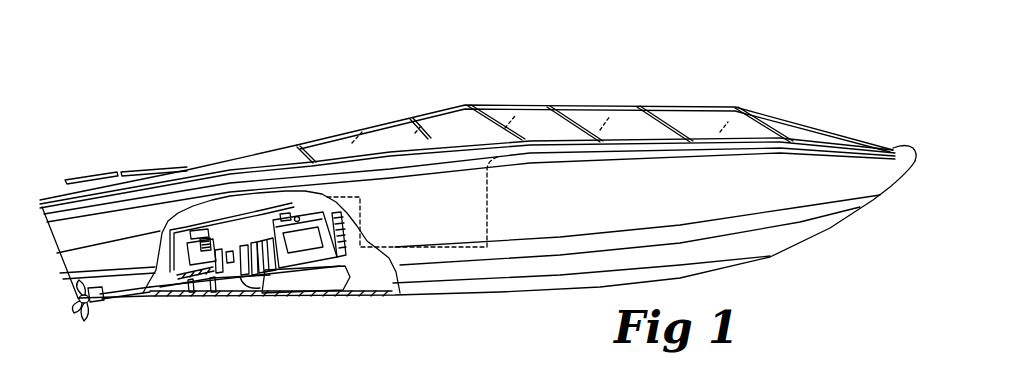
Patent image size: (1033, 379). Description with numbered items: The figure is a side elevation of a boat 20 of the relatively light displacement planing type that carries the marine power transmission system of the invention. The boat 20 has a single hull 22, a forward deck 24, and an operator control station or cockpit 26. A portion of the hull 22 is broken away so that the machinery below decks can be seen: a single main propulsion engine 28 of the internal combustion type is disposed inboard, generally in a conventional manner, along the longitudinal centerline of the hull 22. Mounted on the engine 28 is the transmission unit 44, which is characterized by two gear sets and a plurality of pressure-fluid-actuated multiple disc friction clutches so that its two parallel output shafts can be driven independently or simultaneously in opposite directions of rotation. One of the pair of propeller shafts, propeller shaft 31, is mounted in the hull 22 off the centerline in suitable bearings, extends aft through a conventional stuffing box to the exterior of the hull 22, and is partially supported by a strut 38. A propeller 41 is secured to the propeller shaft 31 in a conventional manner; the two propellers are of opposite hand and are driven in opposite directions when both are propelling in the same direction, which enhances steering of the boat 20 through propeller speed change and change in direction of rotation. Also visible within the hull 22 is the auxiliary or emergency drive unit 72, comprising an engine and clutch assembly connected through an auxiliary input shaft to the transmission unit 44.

The boat 20 is at (552, 72).
The hull 22 is at (717, 262).
The forward deck 24 is at (663, 143).
The operator control station or cockpit 26 is at (484, 212).
The main propulsion engine 28 is at (295, 220).
The propeller shaft 31 is at (201, 297).
The strut 38 is at (101, 302).
The propeller 41 is at (113, 342).
The transmission unit 44 is at (245, 296).
The auxiliary or emergency drive unit 72 is at (200, 230).